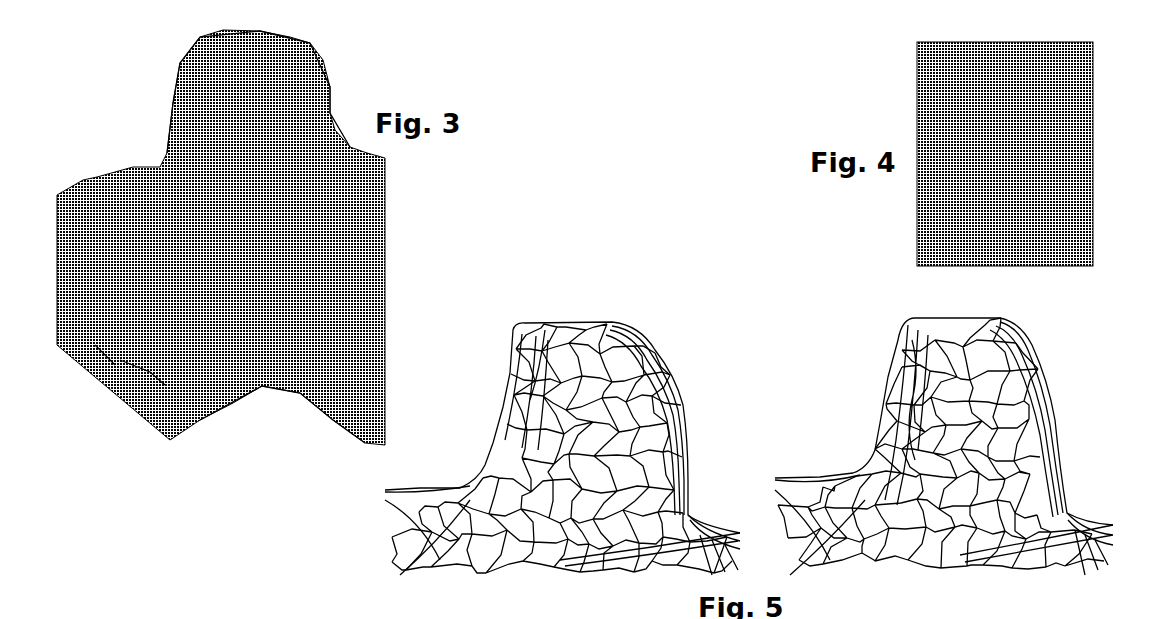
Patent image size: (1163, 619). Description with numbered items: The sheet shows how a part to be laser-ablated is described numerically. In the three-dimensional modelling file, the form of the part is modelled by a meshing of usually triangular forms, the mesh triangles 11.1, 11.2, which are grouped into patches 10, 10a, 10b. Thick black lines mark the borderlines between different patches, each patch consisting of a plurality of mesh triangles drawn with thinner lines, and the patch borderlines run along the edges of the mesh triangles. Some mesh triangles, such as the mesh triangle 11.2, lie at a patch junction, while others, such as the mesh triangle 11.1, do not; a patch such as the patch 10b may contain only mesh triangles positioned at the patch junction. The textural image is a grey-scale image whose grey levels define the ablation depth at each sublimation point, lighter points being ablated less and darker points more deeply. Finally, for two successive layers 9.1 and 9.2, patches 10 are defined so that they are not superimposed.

In FIG. 3, the patch 10 is at (350, 199).
In FIG. 5, the patch 10 is at (1012, 412).
In FIG. 3, the patch 10a is at (210, 420).
In FIG. 3, the patch 10b is at (114, 347).
In FIG. 3, the mesh triangle 11.1 is at (148, 377).
In FIG. 3, the mesh triangle 11.2 is at (102, 352).
In FIG. 5, the layer 9.1 is at (677, 402).
In FIG. 5, the layer 9.2 is at (870, 388).